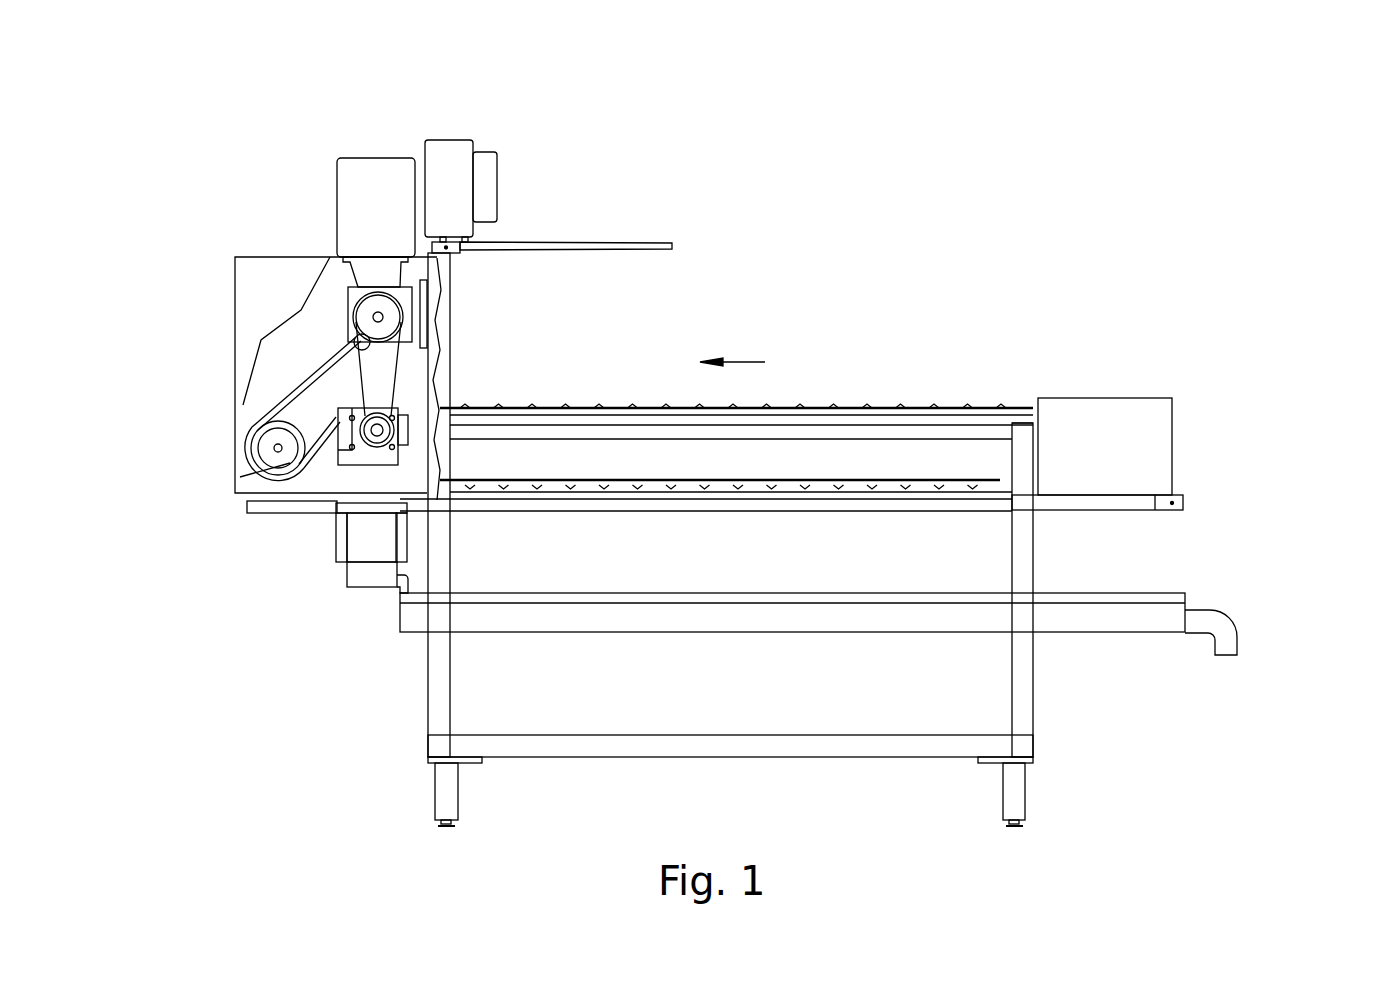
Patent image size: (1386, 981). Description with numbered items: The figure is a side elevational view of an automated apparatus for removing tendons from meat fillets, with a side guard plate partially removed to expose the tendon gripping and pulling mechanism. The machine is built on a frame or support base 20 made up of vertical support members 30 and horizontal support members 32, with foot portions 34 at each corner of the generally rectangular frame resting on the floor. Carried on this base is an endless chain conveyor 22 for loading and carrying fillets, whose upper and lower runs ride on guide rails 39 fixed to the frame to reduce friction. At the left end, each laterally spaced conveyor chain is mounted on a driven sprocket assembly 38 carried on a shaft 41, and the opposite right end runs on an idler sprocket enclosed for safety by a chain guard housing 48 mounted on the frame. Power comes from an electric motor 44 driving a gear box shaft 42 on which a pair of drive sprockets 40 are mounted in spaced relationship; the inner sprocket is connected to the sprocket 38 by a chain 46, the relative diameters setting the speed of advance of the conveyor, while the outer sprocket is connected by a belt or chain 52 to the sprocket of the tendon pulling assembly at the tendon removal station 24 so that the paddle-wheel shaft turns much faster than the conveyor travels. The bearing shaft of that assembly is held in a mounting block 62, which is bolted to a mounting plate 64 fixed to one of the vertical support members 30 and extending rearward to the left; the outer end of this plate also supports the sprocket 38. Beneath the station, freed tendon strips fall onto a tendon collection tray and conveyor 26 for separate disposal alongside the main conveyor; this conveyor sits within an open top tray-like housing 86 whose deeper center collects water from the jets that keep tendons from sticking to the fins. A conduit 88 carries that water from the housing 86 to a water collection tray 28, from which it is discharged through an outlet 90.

The frame or support base 20 is at (1066, 562).
The endless chain conveyor 22 is at (787, 406).
The tendon removal station 24 is at (338, 371).
The tendon collection tray and conveyor 26 is at (345, 540).
The water collection tray 28 is at (815, 620).
The vertical support members 30 is at (435, 655).
The horizontal support members 32 is at (755, 505).
The foot portions 34 is at (448, 790).
The driven sprocket assembly 38 is at (262, 445).
The guide rails 39 is at (945, 420).
The drive sprockets 40 is at (388, 305).
The shaft 41 is at (272, 450).
The gear box shaft 42 is at (383, 318).
The electric motor 44 is at (365, 185).
The chain 46 is at (298, 370).
The chain guard housing 48 is at (245, 273).
The belt or chain 52 is at (403, 375).
The mounting block 62 is at (424, 462).
The mounting plate 64 is at (306, 468).
The tray-like housing 86 is at (355, 578).
The conduit 88 is at (408, 580).
The outlet 90 is at (1230, 638).